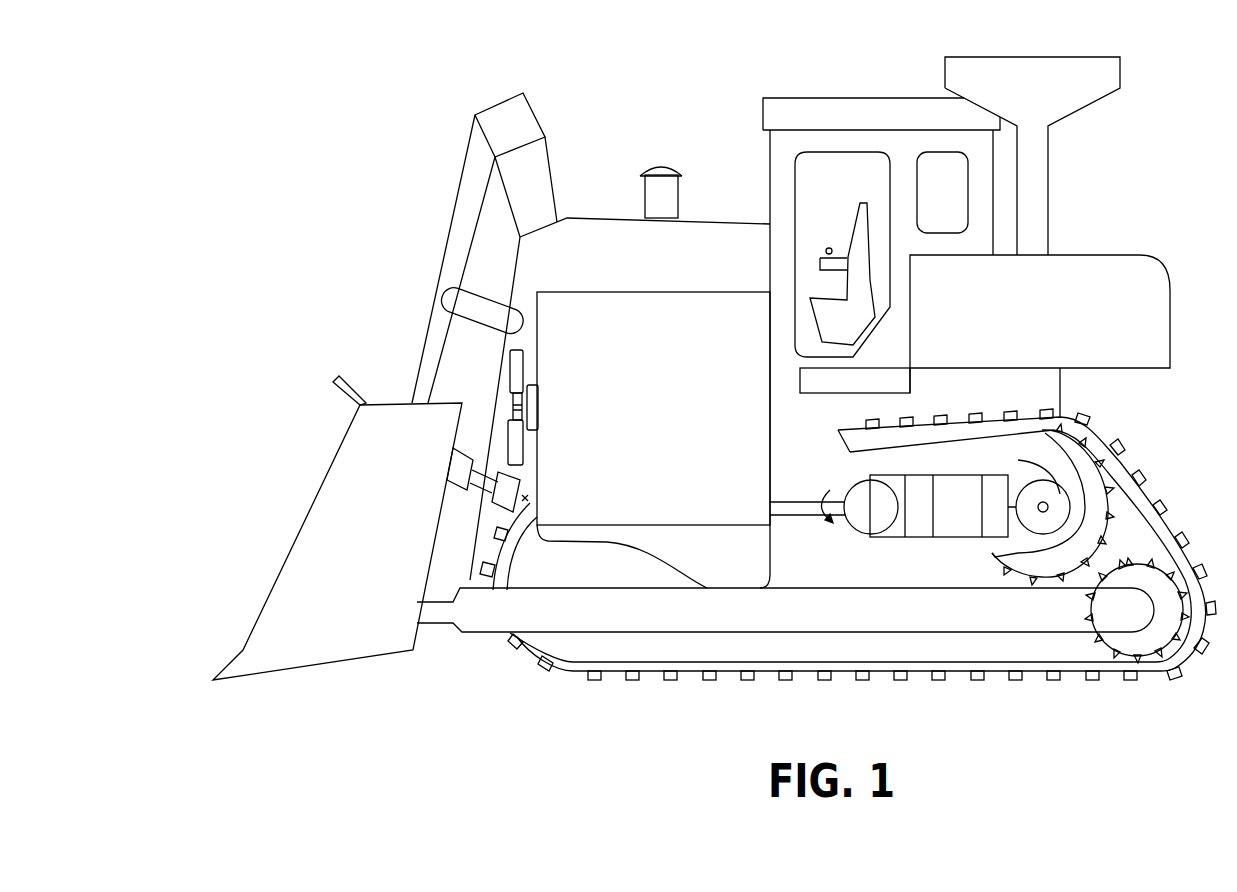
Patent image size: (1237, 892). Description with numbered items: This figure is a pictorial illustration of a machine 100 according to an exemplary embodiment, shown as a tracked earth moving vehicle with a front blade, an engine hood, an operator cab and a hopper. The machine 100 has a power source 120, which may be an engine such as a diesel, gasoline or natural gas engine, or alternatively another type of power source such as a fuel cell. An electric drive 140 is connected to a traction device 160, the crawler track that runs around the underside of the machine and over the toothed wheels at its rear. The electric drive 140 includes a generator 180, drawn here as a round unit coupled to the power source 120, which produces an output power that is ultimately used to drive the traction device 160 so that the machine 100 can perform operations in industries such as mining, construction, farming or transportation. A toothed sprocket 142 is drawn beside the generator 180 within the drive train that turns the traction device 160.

The machine 100 is at (720, 382).
The power source 120 is at (653, 408).
The electric drive 140 is at (937, 560).
The drive sprocket 142 is at (1048, 507).
The traction device 160 is at (1100, 424).
The generator 180 is at (893, 506).